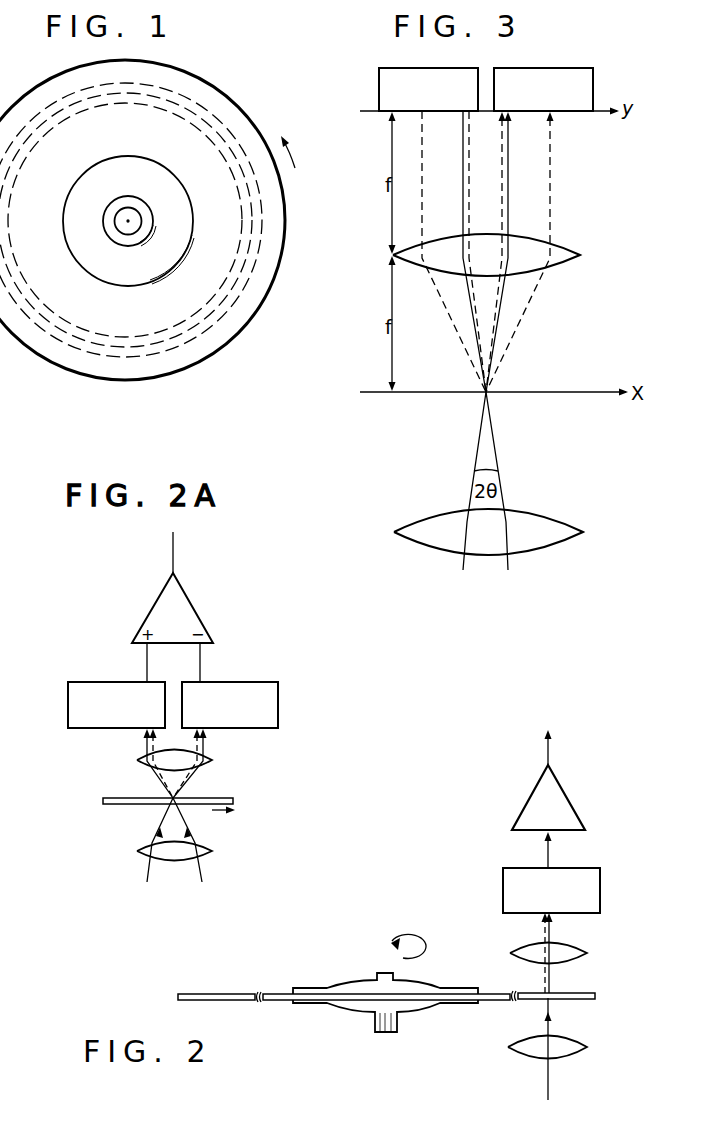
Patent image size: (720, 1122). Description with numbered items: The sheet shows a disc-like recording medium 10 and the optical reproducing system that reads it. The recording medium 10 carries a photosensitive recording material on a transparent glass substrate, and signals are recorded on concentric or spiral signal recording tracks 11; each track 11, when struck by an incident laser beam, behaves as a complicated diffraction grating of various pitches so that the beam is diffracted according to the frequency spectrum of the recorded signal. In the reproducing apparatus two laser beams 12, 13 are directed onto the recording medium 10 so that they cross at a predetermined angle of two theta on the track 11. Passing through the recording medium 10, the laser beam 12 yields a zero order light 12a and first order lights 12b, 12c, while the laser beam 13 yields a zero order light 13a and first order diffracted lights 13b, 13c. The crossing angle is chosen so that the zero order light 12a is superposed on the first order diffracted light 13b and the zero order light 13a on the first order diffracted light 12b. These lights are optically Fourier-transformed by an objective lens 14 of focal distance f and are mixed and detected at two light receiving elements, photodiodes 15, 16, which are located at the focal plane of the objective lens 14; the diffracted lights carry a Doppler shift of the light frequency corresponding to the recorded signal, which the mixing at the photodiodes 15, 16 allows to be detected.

In FIG. 1, the recording medium 10 is at (275, 262).
In FIG. 2A, the recording medium 10 is at (122, 797).
In FIG. 2, the recording medium 10 is at (212, 994).
In FIG. 1, the signal recording track 11 is at (262, 215).
In FIG. 3, the laser beam 12 is at (469, 463).
In FIG. 2A, the laser beam 12 is at (152, 830).
In FIG. 2, the laser beam 12 is at (553, 1023).
In FIG. 3, the laser beam 13 is at (497, 464).
In FIG. 2A, the laser beam 13 is at (190, 830).
In FIG. 2, the laser beam 13 is at (558, 1013).
In FIG. 3, the zero order light 12a is at (525, 160).
In FIG. 3, the first order light 12b is at (486, 157).
In FIG. 3, the first order light 12c is at (550, 197).
In FIG. 3, the zero order light 13a is at (462, 157).
In FIG. 3, the first order diffracted light 13b is at (502, 197).
In FIG. 3, the first order diffracted light 13c is at (443, 190).
In FIG. 3, the objective lens 14 is at (580, 255).
In FIG. 2A, the objective lens 14 is at (212, 760).
In FIG. 2, the objective lens 14 is at (587, 953).
In FIG. 3, the photodiode 15 is at (593, 88).
In FIG. 2A, the photodiode 15 is at (278, 704).
In FIG. 2, the photodiode 15 is at (600, 895).
In FIG. 3, the photodiode 16 is at (379, 86).
In FIG. 2A, the photodiode 16 is at (68, 703).
In FIG. 2, the photodiode 16 is at (600, 868).